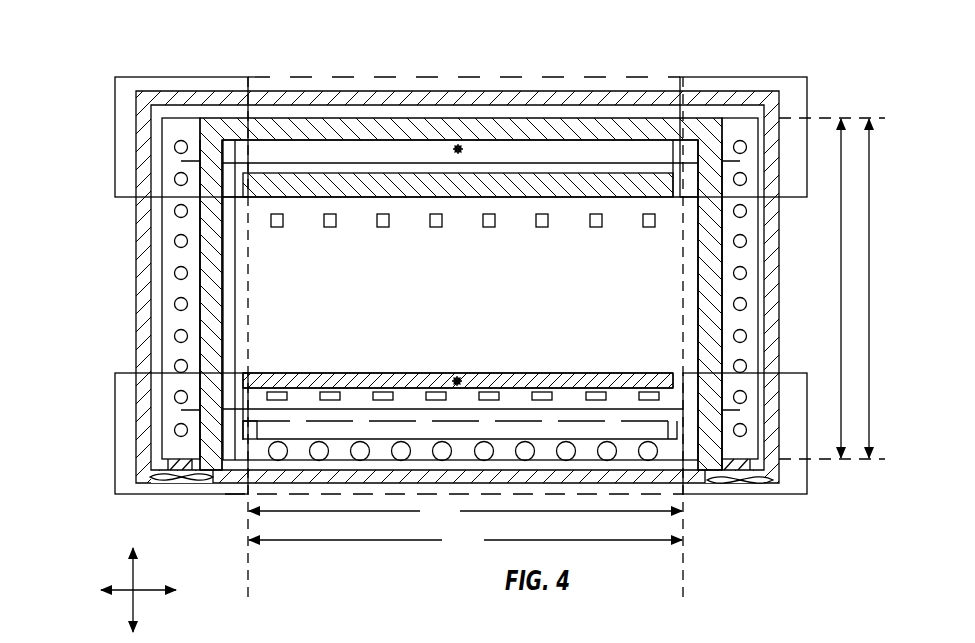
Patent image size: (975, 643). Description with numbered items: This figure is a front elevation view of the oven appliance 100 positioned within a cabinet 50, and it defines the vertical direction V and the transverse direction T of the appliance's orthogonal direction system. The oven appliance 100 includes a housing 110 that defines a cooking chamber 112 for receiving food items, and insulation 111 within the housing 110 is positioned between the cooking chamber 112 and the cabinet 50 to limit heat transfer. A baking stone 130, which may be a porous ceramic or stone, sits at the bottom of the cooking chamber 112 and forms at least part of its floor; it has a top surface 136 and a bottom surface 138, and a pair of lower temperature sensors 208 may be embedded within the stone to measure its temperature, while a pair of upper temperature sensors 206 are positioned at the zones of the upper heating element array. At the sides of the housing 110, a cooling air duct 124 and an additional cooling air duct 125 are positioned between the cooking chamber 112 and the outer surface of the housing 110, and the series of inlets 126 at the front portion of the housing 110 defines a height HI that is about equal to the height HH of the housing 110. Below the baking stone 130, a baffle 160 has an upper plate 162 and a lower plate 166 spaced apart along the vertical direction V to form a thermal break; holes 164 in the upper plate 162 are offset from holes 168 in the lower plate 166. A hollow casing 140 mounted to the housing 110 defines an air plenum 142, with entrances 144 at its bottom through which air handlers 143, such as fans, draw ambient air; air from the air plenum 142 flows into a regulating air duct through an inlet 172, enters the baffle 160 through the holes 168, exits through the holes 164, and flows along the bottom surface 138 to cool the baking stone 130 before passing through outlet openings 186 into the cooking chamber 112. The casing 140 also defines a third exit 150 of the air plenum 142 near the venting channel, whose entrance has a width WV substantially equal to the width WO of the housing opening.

The oven appliance 100 is at (117, 70).
The cabinet 50 is at (768, 93).
The housing 110 is at (522, 110).
The insulation 111 is at (575, 125).
The cooking chamber 112 is at (649, 312).
The cooling air duct 124 is at (176, 290).
The additional cooling air duct 125 is at (743, 258).
The inlet 126 is at (174, 216).
The baking stone 130 is at (420, 378).
The top surface 136 is at (525, 370).
The bottom surface 138 is at (521, 396).
The casing 140 is at (808, 140).
The air plenum 142 is at (126, 148).
The air handlers 143 is at (150, 484).
The entrances 144 is at (215, 499).
The third exit 150 is at (395, 70).
The baffle 160 is at (251, 420).
The upper plate 162 is at (400, 420).
The holes 164 is at (362, 421).
The lower plate 166 is at (600, 385).
The holes 168 is at (264, 434).
The inlet 172 is at (663, 456).
The outlet openings 186 is at (485, 232).
The upper temperature sensors 206 is at (458, 143).
The lower temperature sensors 208 is at (459, 377).
The height of housing HH is at (832, 288).
The height of inlet HI is at (873, 288).
The width of opening WO is at (465, 512).
The width of venting channel entrance WV is at (465, 541).
The vertical direction V is at (131, 575).
The transverse direction T is at (130, 600).